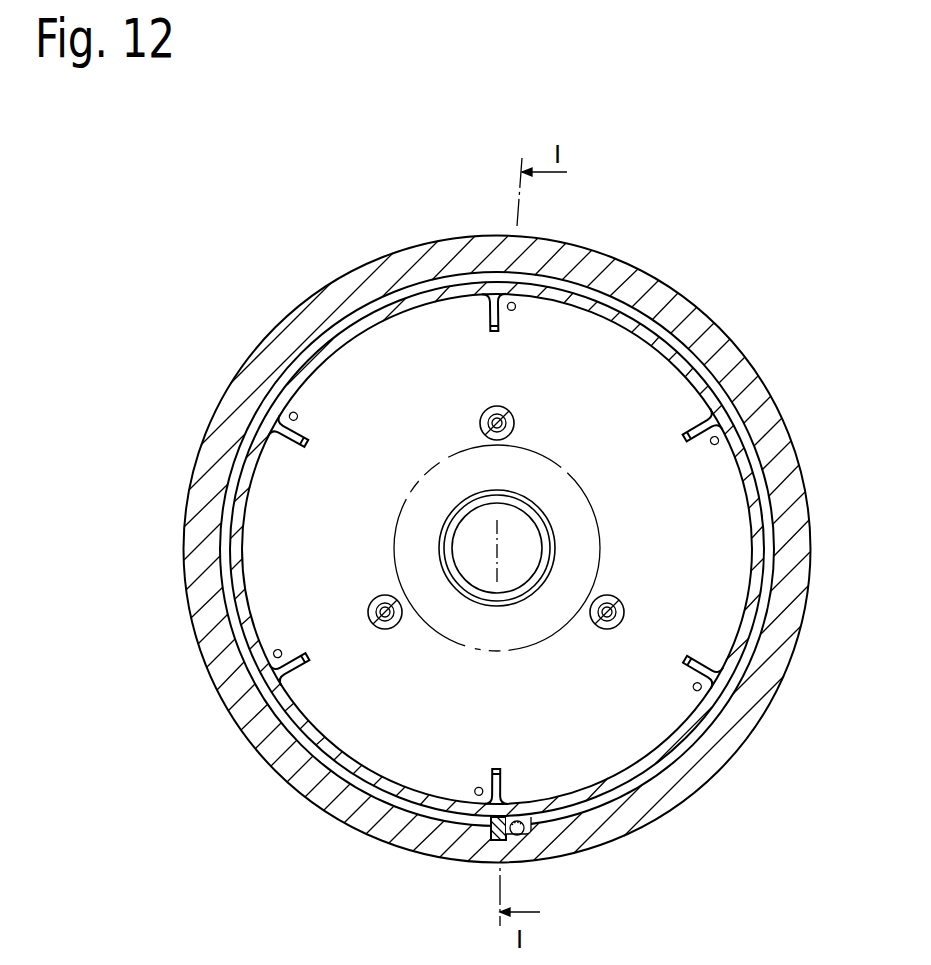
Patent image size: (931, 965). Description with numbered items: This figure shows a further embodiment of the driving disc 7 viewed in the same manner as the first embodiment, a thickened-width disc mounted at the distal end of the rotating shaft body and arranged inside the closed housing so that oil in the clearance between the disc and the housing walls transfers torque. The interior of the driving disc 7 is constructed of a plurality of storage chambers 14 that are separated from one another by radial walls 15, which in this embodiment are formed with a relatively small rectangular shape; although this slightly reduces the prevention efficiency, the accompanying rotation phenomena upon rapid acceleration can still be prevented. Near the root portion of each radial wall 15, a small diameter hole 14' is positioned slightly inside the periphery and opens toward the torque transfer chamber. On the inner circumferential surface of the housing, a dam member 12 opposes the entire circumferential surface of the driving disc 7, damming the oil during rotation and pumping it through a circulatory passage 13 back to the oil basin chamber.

The driving disc 7 is at (757, 567).
The dam member 12 is at (490, 842).
The circulatory passage 13 is at (522, 836).
The storage chamber 14 is at (497, 552).
The small diameter hole 14' is at (504, 571).
The radial wall 15 is at (684, 426).